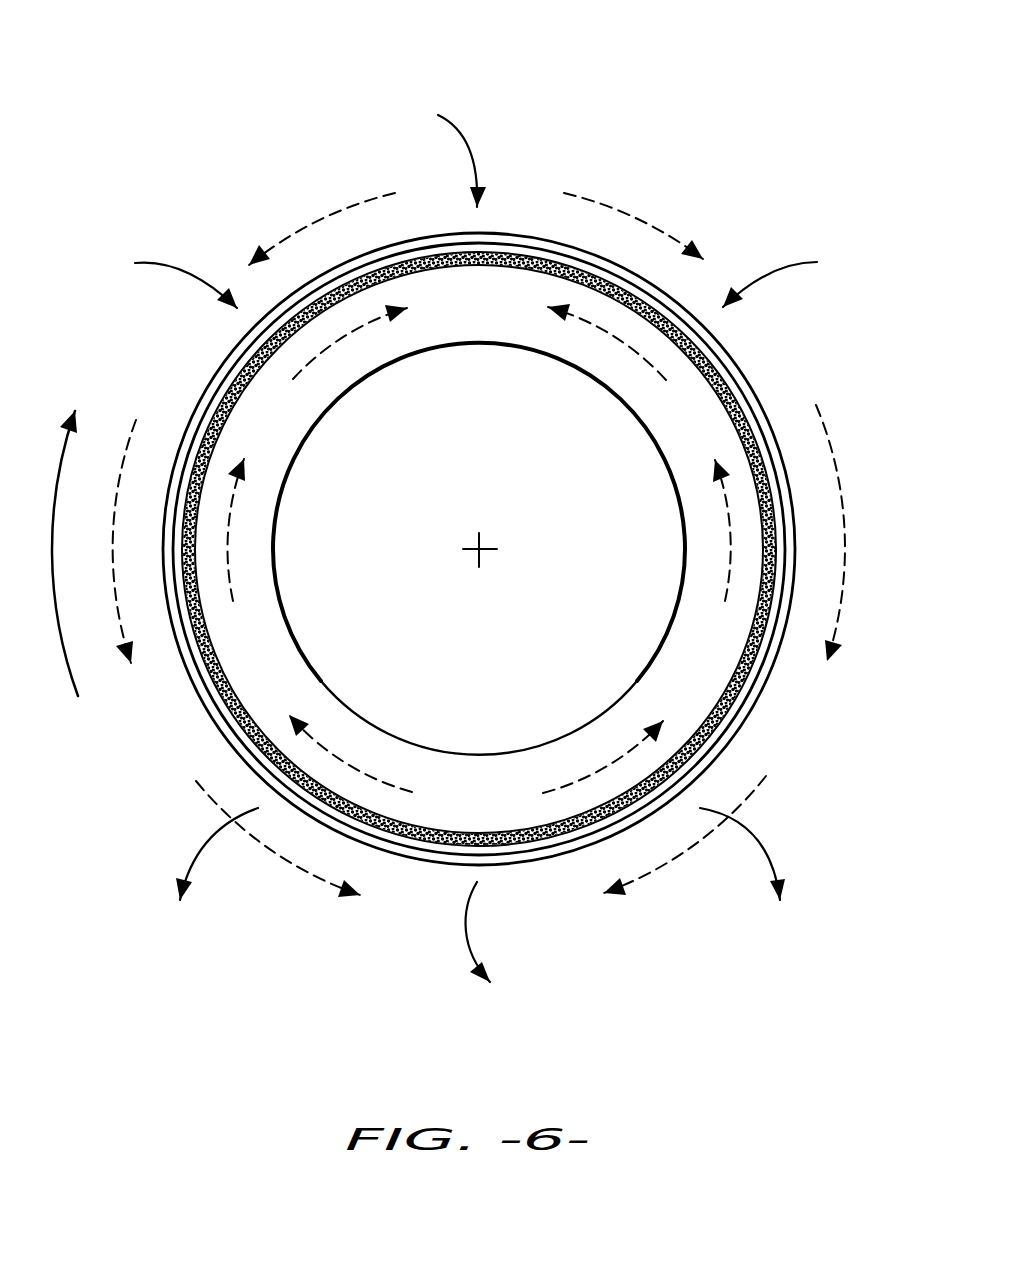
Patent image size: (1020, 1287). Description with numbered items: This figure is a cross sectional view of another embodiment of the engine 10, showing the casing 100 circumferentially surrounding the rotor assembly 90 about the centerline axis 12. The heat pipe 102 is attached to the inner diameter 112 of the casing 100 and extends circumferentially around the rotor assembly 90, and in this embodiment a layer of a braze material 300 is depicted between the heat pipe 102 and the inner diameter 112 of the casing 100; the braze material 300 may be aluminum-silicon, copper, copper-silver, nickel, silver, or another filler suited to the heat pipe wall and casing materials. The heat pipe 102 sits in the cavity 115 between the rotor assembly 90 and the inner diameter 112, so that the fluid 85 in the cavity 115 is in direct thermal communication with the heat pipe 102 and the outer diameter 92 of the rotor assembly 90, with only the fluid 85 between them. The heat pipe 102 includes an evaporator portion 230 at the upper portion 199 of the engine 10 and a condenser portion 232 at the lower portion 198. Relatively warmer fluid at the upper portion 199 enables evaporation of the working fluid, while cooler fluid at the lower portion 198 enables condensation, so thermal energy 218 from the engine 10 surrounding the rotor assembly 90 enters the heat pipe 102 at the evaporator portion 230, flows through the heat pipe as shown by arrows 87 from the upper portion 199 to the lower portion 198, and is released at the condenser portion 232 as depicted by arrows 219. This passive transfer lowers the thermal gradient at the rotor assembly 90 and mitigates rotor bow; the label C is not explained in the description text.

The engine 10 is at (287, 160).
The centerline axis 12 is at (472, 550).
The fluid 85 is at (737, 543).
The flow of thermal energy arrows 87 is at (838, 497).
The rotor assembly 90 is at (562, 357).
The outer diameter of the rotor assembly 92 is at (540, 752).
The casing 100 is at (758, 393).
The heat pipe 102 is at (448, 267).
The inner diameter of the casing 112 is at (503, 858).
The cavity 115 is at (718, 678).
The lower portion 198 is at (502, 1062).
The upper portion 199 is at (492, 50).
The thermal energy 218 is at (470, 145).
The released thermal energy arrows 219 is at (203, 842).
The evaporator portion 230 is at (514, 343).
The condenser portion 232 is at (452, 818).
The braze material 300 is at (718, 352).
The direction of rotation C is at (75, 578).